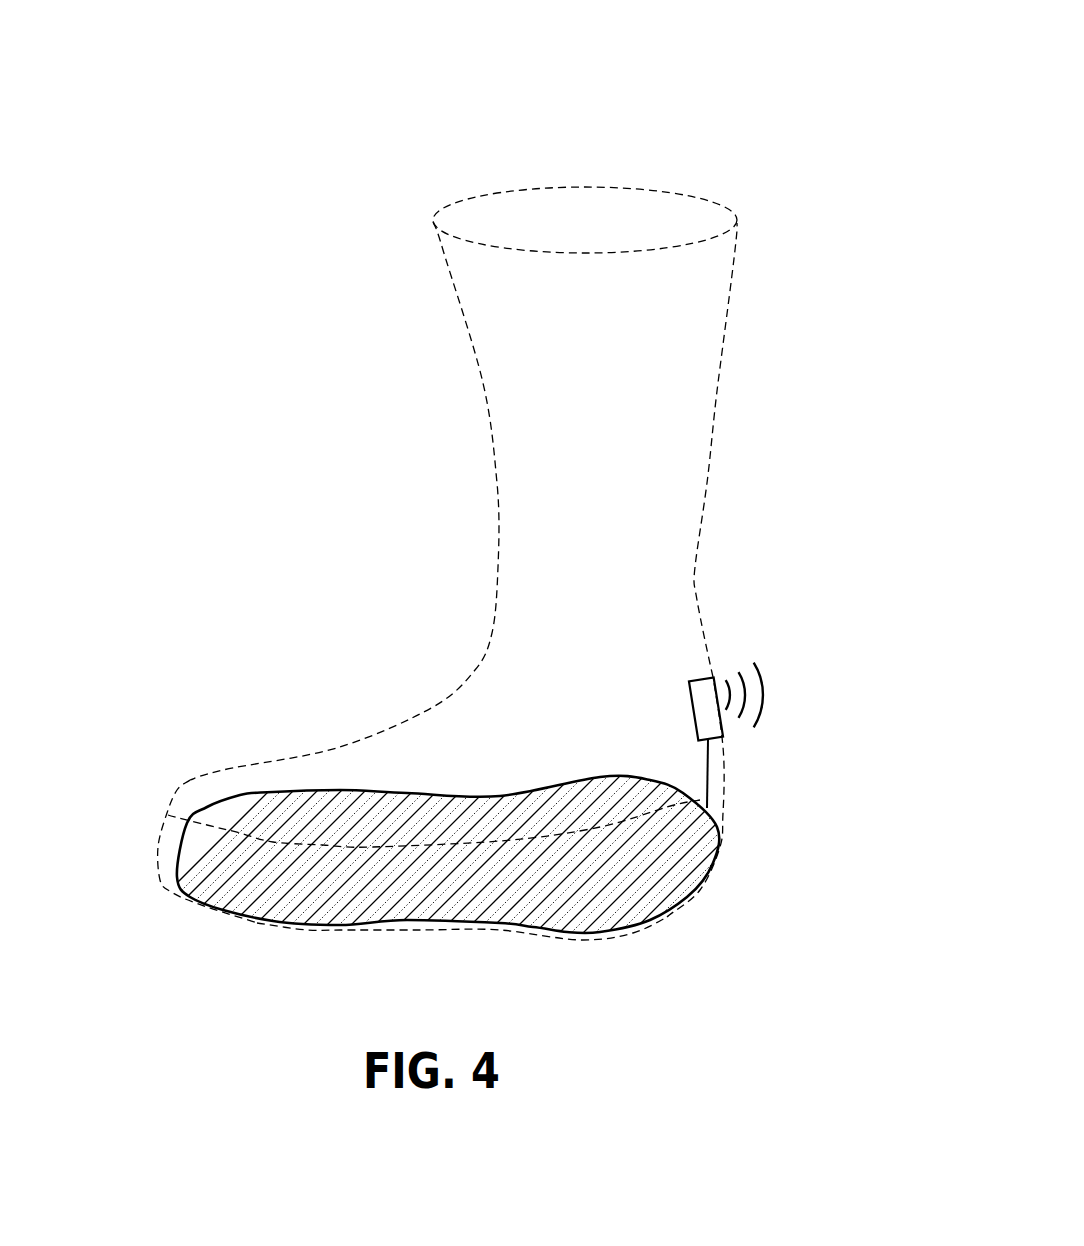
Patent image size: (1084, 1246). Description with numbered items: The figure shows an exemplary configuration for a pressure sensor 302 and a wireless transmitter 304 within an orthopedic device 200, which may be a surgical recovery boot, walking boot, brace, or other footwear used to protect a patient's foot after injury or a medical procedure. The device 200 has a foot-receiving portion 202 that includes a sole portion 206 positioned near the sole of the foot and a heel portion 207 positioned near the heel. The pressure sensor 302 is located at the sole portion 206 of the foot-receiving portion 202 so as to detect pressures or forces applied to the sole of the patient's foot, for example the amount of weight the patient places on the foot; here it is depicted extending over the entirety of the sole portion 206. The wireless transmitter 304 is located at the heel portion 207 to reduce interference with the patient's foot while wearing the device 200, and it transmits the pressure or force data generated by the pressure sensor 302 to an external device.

The orthopedic device 200 is at (460, 553).
The foot-receiving portion 202 is at (460, 843).
The sole portion 206 is at (248, 925).
The heel portion 207 is at (722, 773).
The pressure sensor 302 is at (350, 923).
The wireless transmitter 304 is at (712, 677).